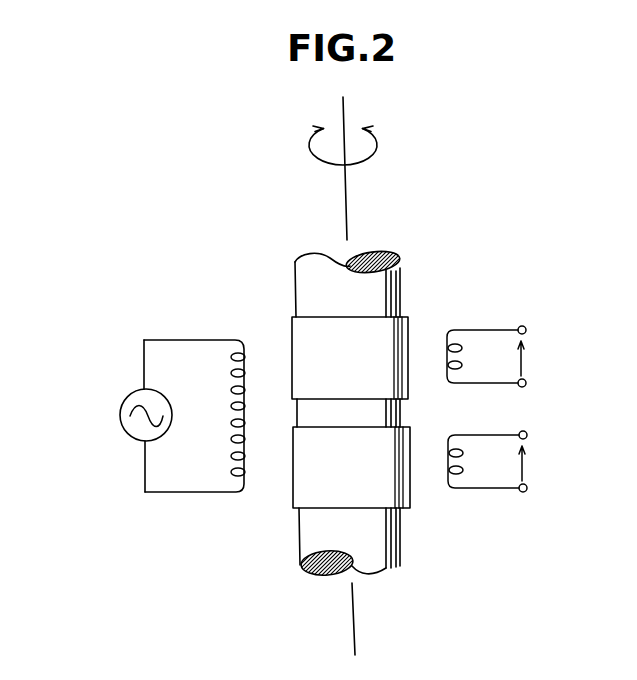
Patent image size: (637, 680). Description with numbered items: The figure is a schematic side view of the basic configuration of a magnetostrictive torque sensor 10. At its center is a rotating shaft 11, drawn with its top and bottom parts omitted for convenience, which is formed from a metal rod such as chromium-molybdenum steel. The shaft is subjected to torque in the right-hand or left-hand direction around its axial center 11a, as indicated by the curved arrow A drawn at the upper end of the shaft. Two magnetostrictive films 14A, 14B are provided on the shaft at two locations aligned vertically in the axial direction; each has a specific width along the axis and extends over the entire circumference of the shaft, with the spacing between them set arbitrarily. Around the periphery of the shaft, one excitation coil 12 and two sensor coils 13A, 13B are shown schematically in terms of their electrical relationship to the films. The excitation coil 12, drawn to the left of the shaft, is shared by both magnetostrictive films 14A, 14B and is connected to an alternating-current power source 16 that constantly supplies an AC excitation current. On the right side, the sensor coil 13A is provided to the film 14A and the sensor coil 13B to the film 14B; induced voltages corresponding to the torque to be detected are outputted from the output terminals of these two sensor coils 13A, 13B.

The magnetostrictive torque sensor 10 is at (473, 228).
The rotating shaft 11 is at (400, 277).
The axial center 11a is at (346, 104).
The excitation coil 12 is at (247, 366).
The sensor coil 13A is at (447, 357).
The sensor coil 13B is at (448, 462).
The magnetostrictive film 14A is at (388, 358).
The magnetostrictive film 14B is at (381, 497).
The alternating-current power source 16 is at (120, 415).
The arrow A is at (377, 143).